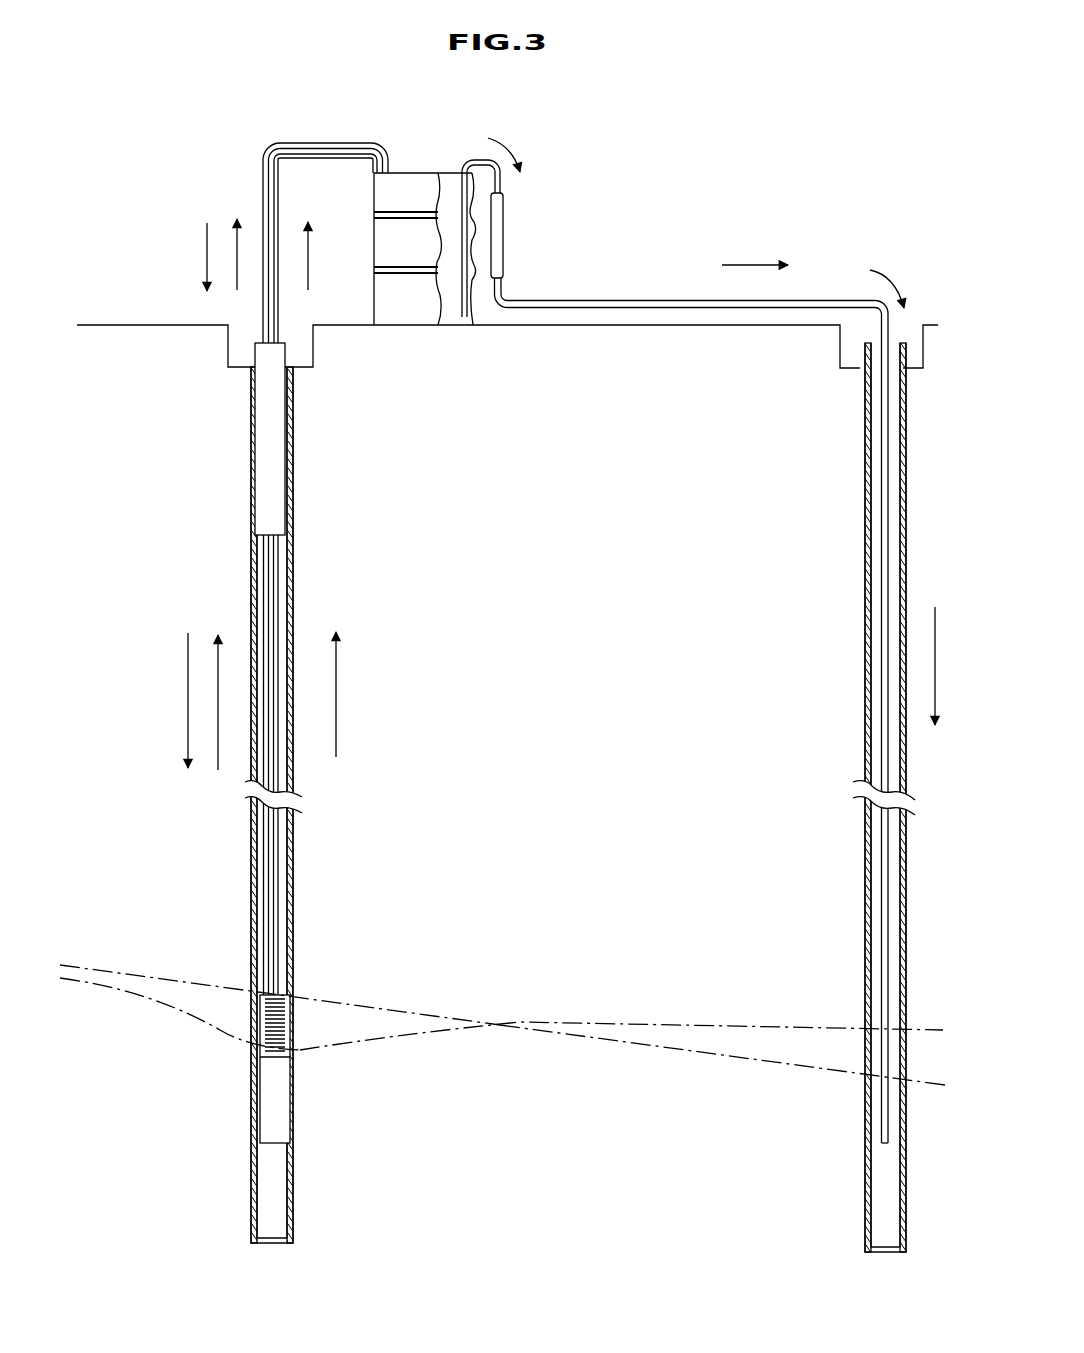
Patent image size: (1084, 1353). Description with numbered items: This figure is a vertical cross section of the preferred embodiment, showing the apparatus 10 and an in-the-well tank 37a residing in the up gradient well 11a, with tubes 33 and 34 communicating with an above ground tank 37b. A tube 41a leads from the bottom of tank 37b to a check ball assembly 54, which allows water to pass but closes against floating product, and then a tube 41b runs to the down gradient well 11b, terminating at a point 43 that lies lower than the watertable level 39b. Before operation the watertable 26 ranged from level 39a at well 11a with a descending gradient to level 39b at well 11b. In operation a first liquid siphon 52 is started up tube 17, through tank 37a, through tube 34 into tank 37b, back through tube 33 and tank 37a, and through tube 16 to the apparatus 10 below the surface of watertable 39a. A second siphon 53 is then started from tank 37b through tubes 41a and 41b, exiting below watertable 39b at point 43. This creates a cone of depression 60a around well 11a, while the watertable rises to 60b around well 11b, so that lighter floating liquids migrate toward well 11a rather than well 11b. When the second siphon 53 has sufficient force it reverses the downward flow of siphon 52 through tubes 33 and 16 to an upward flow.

The preferred embodiment apparatus 10 is at (250, 1108).
The up gradient well 11a is at (251, 431).
The down gradient well 11b is at (865, 429).
The tube 16 is at (263, 590).
The tube 17 is at (281, 593).
The watertable 26 is at (192, 1217).
The tube 33 is at (262, 164).
The tube 34 is at (290, 169).
The tank 37a is at (281, 497).
The tank 37b is at (420, 310).
The watertable level at well 11a 39a is at (187, 978).
The watertable level at well 11b 39b is at (790, 1066).
The tube 41a is at (470, 160).
The tube 41b is at (638, 300).
The point 43 is at (884, 1146).
The first liquid siphon 52 is at (191, 271).
The second siphon 53 is at (868, 258).
The check ball assembly 54 is at (504, 240).
The cone of depression 60a is at (200, 1010).
The raised watertable 60b is at (782, 1026).